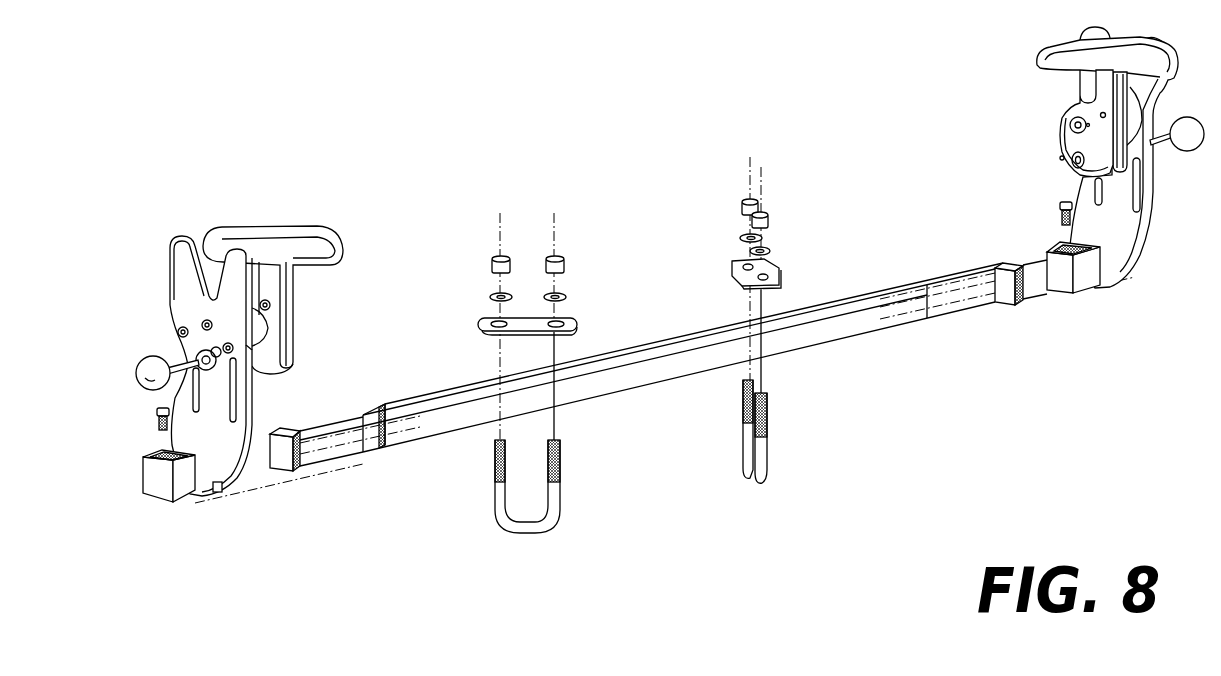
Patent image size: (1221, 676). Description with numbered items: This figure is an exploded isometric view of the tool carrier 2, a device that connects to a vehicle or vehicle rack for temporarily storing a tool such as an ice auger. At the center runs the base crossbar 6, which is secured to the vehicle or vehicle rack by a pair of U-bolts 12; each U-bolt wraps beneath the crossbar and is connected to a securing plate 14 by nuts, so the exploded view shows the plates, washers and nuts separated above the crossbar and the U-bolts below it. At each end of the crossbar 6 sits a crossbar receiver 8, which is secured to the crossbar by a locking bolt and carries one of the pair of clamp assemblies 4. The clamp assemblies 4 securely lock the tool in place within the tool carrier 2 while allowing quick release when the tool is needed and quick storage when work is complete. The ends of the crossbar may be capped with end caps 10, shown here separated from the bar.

The tool carrier 2 is at (327, 92).
The clamp assemblies 4 is at (107, 252).
The base crossbar 6 is at (680, 333).
The crossbar receiver 8 is at (147, 478).
The end caps 10 is at (272, 466).
The U-bolts 12 is at (563, 497).
The securing plate 14 is at (487, 321).